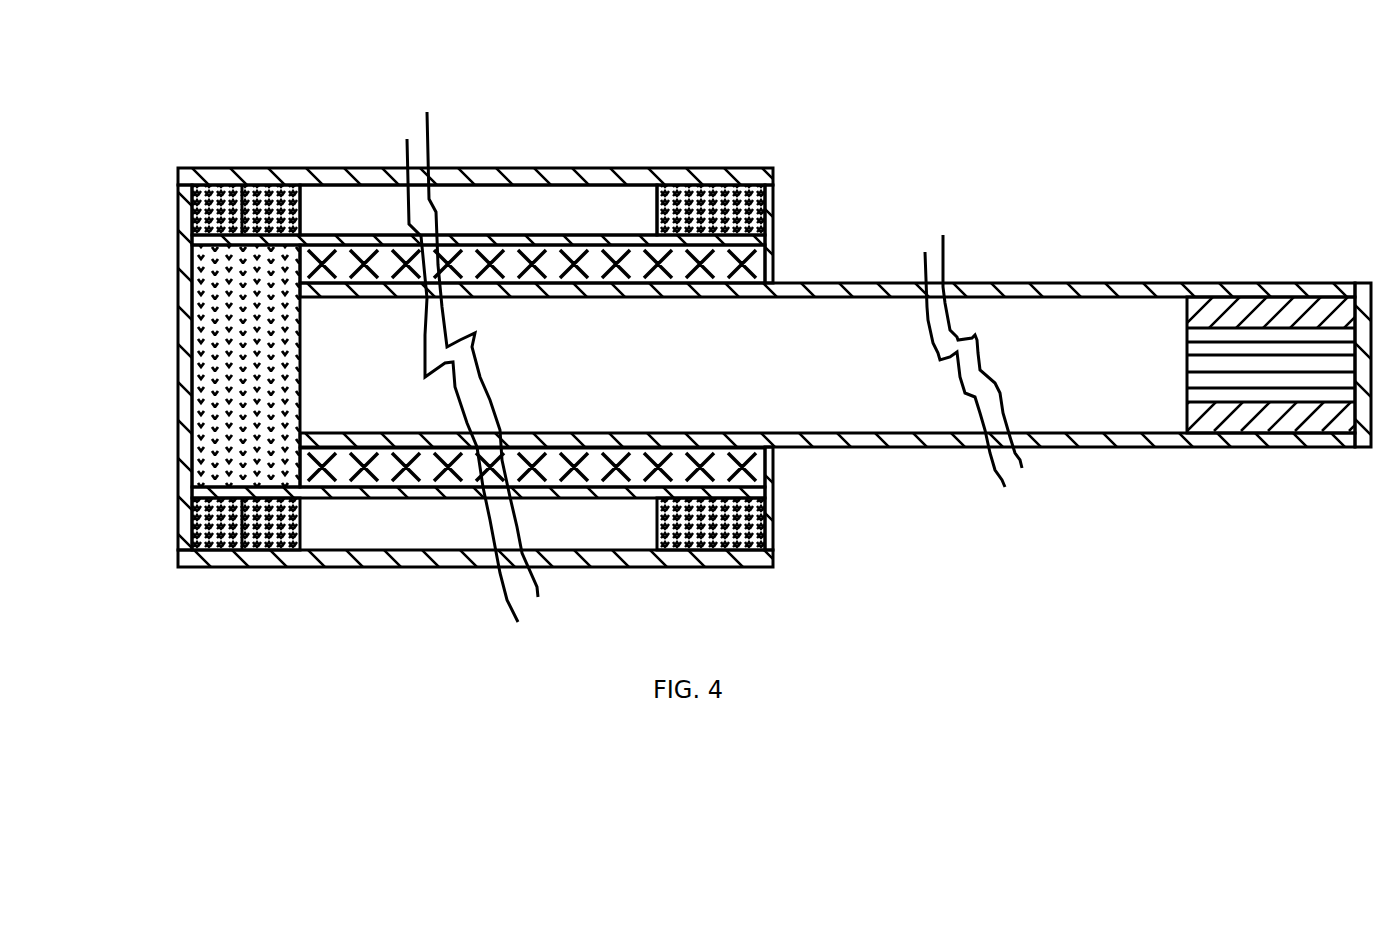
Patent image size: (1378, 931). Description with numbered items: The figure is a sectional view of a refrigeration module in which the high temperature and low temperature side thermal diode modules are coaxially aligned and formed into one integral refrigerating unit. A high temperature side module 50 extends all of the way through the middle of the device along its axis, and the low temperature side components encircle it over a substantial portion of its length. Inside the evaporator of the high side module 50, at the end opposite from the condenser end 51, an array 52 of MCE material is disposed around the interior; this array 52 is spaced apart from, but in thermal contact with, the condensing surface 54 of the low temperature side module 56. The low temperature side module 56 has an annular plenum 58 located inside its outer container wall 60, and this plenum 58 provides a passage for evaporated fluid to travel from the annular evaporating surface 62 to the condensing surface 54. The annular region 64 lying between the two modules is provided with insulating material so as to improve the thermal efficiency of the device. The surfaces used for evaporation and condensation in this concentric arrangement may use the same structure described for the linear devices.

The high temperature side module 50 is at (935, 447).
The condenser end 51 is at (1293, 323).
The array of MCE material 52 is at (227, 442).
The condensing surface 54 is at (240, 187).
The low temperature side module 56 is at (677, 568).
The annular plenum 58 is at (565, 210).
The outer container wall 60 is at (453, 173).
The annular evaporating surface 62 is at (728, 187).
The annular region 64 is at (745, 262).